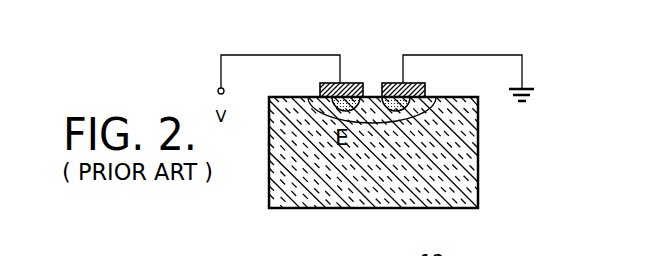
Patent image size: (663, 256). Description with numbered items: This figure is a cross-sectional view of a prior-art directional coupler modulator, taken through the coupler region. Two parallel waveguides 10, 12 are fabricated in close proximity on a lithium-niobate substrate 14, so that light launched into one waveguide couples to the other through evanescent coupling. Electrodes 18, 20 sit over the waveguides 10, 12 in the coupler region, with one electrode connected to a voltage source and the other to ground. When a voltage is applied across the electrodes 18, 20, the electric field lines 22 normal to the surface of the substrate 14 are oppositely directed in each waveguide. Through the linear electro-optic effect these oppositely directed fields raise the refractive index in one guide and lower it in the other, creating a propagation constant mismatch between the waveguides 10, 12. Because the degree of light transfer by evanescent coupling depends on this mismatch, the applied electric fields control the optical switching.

The waveguide 10 is at (311, 103).
The waveguide 12 is at (434, 98).
The lithium-niobate substrate 14 is at (478, 157).
The electrode 18 is at (355, 83).
The electrode 20 is at (395, 83).
The electric field lines 22 is at (383, 123).